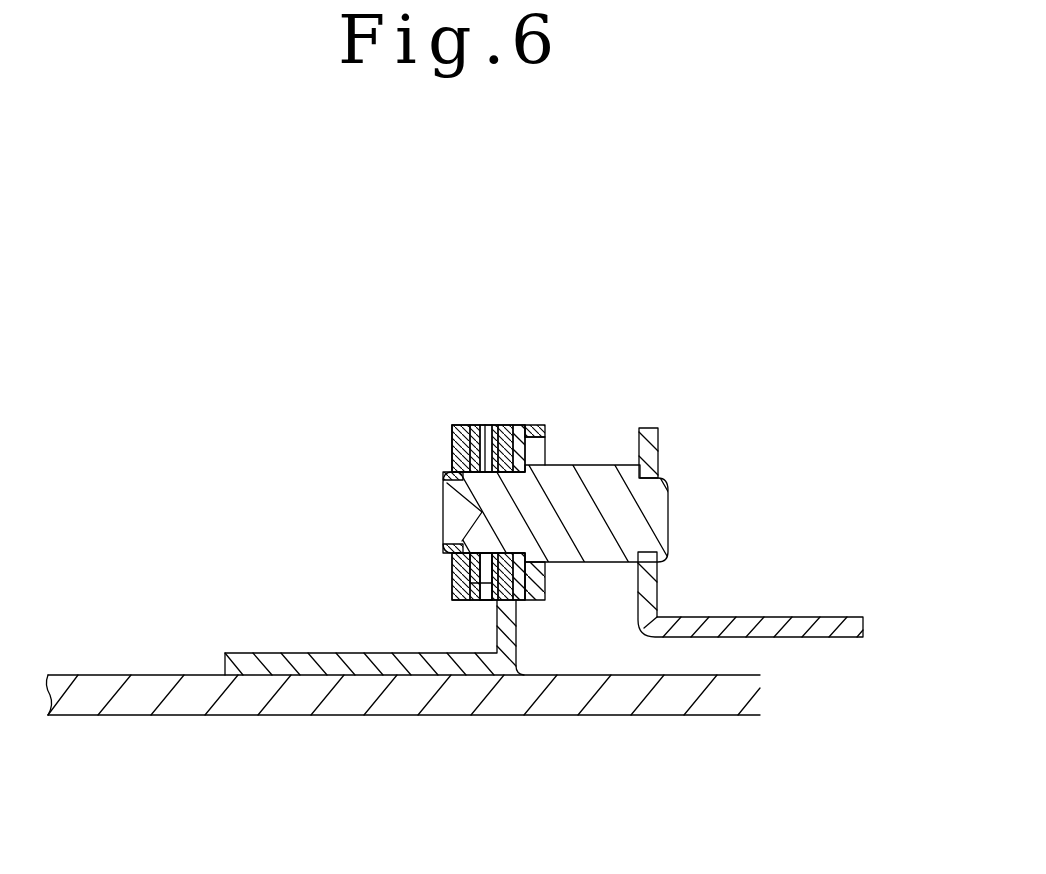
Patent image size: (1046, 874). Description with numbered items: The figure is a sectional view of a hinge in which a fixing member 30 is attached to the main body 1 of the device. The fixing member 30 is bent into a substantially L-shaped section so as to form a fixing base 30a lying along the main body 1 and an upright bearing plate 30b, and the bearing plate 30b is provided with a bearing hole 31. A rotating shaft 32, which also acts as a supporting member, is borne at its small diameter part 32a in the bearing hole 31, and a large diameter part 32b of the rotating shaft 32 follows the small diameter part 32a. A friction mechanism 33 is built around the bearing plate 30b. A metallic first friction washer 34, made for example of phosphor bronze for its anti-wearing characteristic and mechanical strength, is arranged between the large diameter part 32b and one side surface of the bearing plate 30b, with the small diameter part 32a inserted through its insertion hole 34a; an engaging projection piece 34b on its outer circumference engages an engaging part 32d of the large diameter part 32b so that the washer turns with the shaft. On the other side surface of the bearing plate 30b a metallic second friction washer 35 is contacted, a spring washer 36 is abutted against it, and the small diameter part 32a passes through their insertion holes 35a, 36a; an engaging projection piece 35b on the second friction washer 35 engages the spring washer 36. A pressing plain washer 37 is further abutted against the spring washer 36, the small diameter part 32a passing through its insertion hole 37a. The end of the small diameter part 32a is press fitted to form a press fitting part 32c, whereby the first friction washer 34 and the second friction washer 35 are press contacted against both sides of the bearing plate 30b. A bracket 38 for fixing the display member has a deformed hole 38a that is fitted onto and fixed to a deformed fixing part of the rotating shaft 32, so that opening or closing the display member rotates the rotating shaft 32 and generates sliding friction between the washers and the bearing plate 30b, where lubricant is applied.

The base plate 1 is at (150, 675).
The fixing member 30 is at (296, 648).
The fixing base 30a is at (400, 668).
The bearing plate 30b is at (505, 668).
The bearing hole 31 is at (532, 528).
The rotating shaft 32 is at (552, 465).
The small diameter part 32a is at (443, 478).
The large diameter part 32b is at (548, 440).
The press fitting part 32c is at (443, 545).
The engaging part 32d is at (652, 534).
The friction mechanism 33 is at (423, 360).
The first friction washer 34 is at (505, 425).
The insertion hole 34a is at (550, 562).
The engaging projection piece 34b is at (540, 425).
The second friction washer 35 is at (490, 425).
The insertion hole 35a is at (498, 600).
The engaging projection piece 35b is at (460, 610).
The spring washer 36 is at (480, 425).
The insertion hole 36a is at (443, 556).
The pressing plain washer 37 is at (452, 444).
The insertion hole 37a is at (443, 467).
The bracket 38 is at (771, 532).
The deformed hole 38a is at (667, 492).